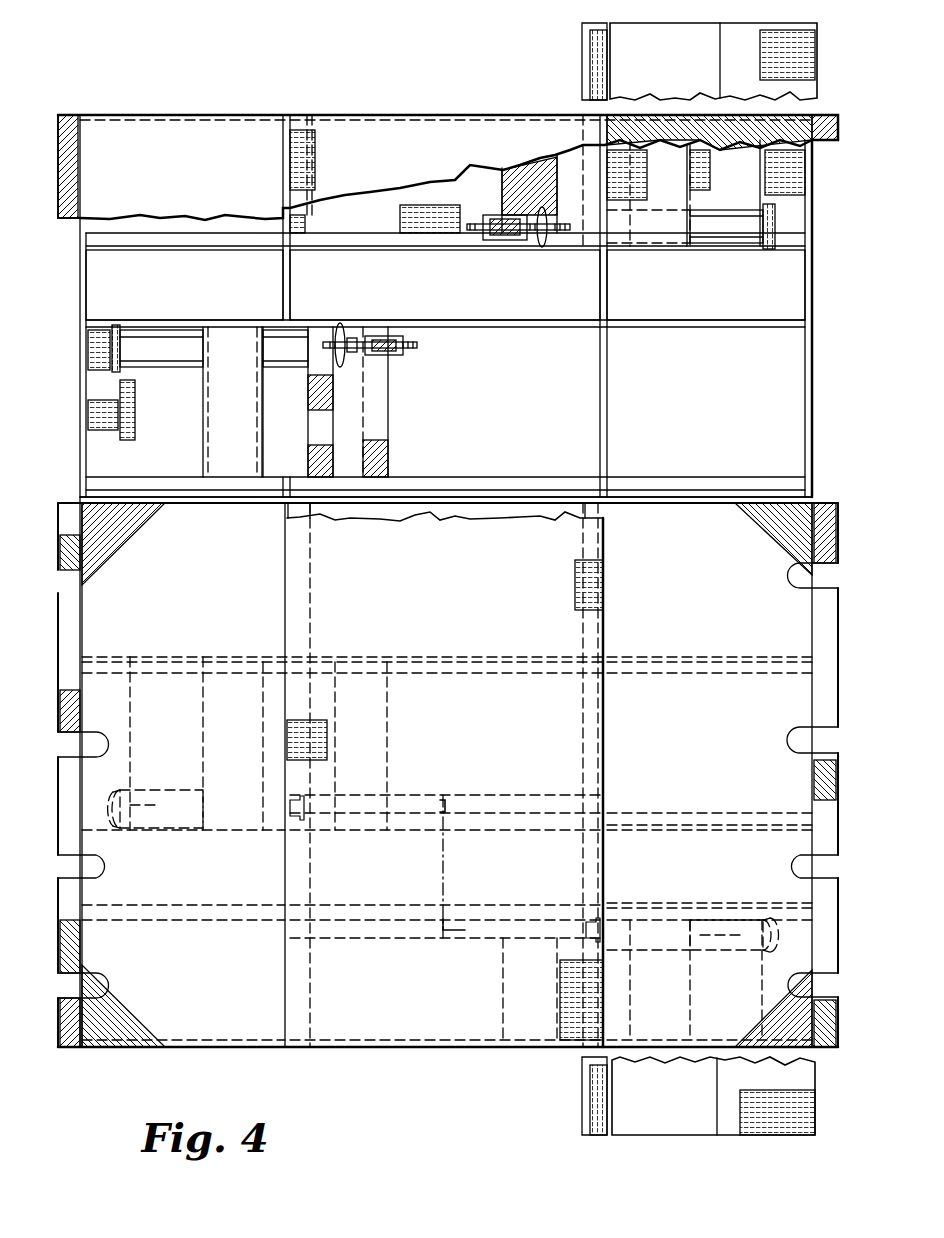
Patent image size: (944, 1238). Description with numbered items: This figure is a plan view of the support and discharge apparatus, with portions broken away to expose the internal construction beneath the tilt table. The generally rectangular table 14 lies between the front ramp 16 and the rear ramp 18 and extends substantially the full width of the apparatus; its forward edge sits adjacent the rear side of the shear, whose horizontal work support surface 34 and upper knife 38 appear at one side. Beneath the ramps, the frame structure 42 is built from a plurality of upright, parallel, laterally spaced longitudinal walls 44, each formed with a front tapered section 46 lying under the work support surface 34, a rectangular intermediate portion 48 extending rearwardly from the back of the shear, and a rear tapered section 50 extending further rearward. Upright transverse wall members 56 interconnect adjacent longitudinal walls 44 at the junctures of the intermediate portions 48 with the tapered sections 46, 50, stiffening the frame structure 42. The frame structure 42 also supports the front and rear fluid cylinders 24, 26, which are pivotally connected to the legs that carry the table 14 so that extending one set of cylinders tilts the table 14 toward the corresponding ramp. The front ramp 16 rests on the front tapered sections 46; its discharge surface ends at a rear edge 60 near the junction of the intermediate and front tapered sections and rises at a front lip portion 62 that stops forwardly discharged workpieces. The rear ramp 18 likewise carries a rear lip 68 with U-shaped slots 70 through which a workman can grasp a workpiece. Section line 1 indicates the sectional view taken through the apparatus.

The section line 1- 1 is at (100, 803).
The table 14 is at (450, 1008).
The front ramp 16 is at (742, 1017).
The rear ramp 18 is at (210, 995).
The front fluid cylinder 24 is at (708, 935).
The rear fluid cylinder 26 is at (180, 830).
The work support surface 34 is at (748, 80).
The upper knife 38 is at (582, 62).
The frame structure 42 is at (140, 1053).
The longitudinal wall 44 is at (483, 328).
The front tapered section 46 is at (666, 491).
The intermediate portion 48 is at (510, 491).
The rear tapered section 50 is at (110, 488).
The transverse wall member 56 is at (607, 292).
The rear edge 60 is at (792, 740).
The front lip portion 62 is at (828, 1048).
The rear lip 68 is at (78, 1048).
The U-shaped slot 70 is at (98, 740).